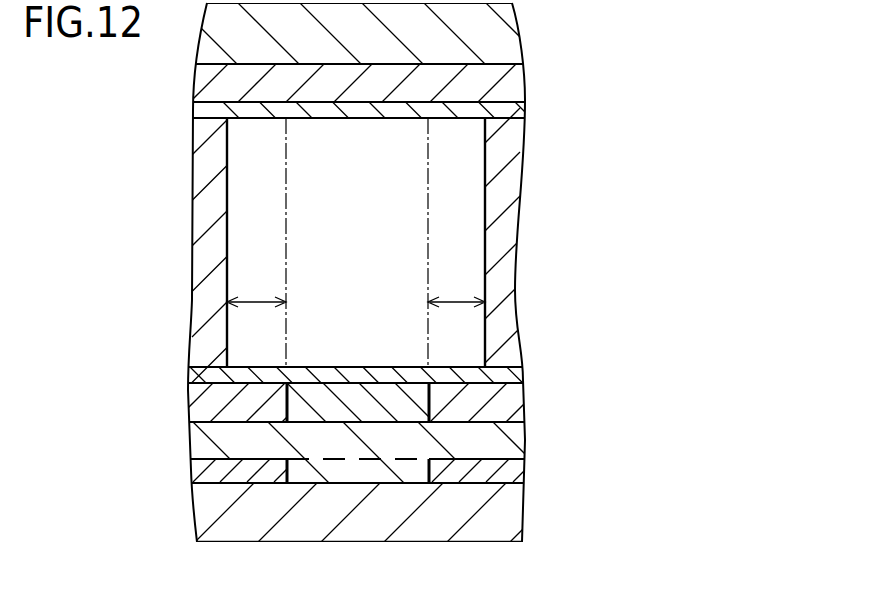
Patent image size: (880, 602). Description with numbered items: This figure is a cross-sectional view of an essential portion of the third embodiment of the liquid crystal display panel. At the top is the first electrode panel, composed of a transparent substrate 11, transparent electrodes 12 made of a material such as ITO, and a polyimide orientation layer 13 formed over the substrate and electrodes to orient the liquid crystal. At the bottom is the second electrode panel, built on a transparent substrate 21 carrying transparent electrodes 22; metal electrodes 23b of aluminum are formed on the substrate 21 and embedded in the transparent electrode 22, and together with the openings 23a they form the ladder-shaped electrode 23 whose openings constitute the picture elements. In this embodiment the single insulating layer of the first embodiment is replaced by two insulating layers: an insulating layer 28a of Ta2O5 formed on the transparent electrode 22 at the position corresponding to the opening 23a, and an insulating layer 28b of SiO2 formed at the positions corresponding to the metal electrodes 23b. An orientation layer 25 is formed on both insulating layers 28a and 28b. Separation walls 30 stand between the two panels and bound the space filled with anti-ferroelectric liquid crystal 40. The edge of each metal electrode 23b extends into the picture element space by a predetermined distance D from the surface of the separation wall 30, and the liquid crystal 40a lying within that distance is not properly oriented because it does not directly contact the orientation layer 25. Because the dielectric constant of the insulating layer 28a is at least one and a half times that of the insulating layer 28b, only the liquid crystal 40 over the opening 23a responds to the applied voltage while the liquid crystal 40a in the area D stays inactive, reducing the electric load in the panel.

The transparent substrate 11 is at (487, 23).
The transparent electrodes 12 is at (505, 80).
The orientation layer 13 is at (515, 110).
The separation wall 30 is at (205, 210).
The anti-ferroelectric liquid crystal 40 is at (418, 168).
The anti-ferroelectric liquid crystal 40a is at (250, 188).
The orientation layer 25 is at (515, 377).
The insulating layer 28b is at (507, 402).
The insulating layer 28a is at (365, 415).
The transparent electrodes 22 is at (512, 438).
The ladder-shaped electrode 23 is at (523, 472).
The opening 23a is at (288, 462).
The metal electrodes 23b is at (467, 470).
The transparent substrate 21 is at (510, 520).